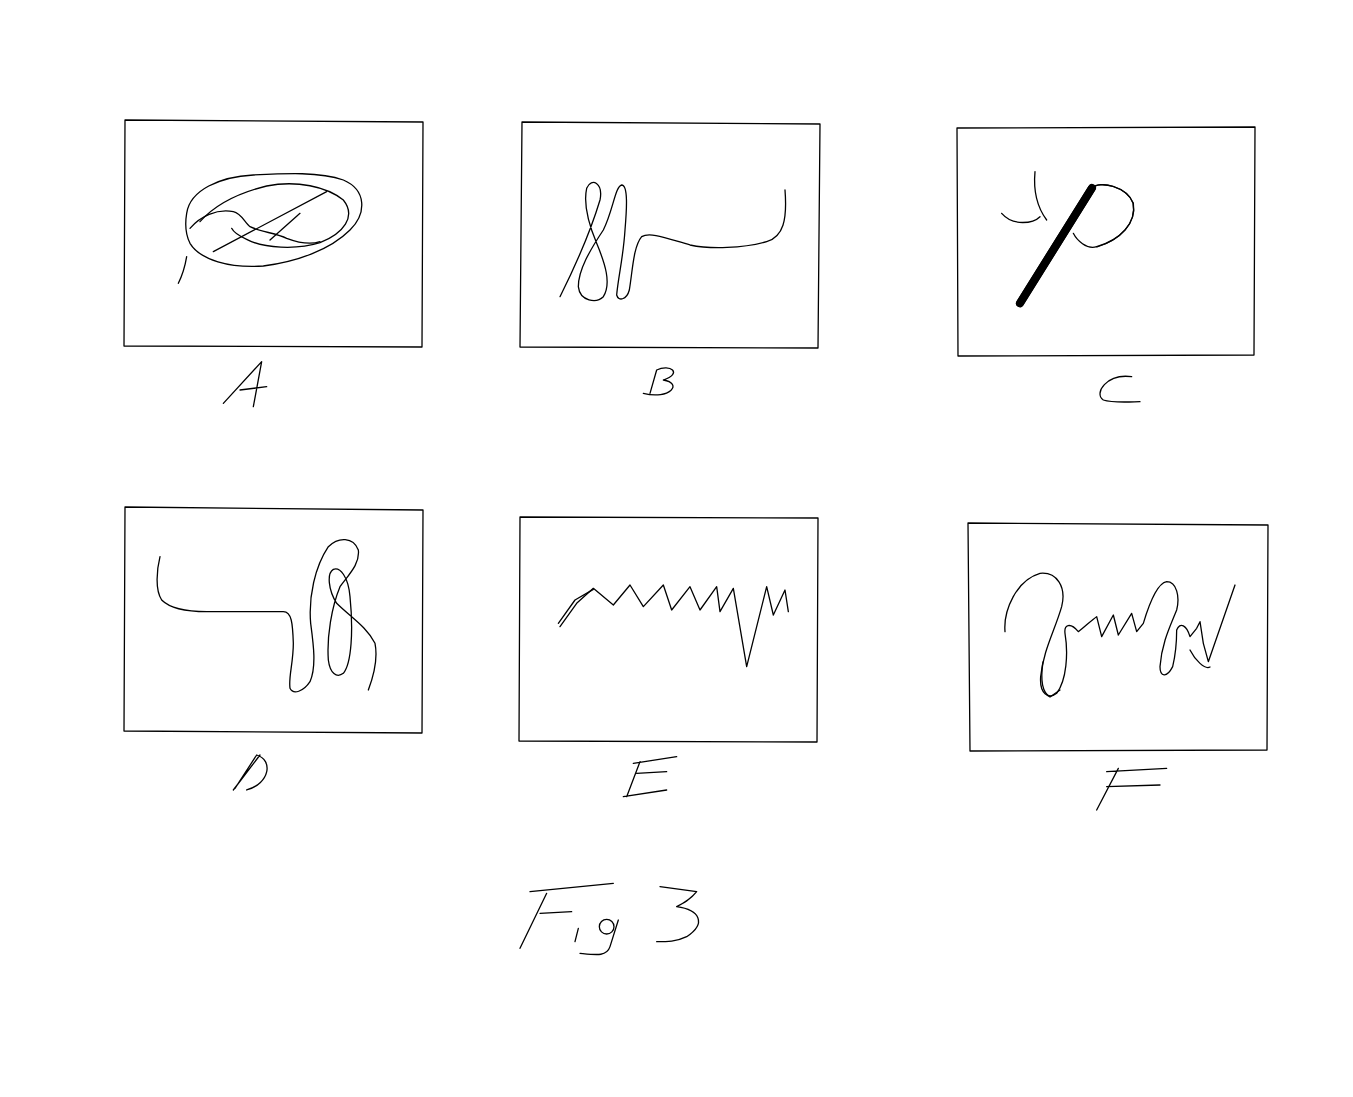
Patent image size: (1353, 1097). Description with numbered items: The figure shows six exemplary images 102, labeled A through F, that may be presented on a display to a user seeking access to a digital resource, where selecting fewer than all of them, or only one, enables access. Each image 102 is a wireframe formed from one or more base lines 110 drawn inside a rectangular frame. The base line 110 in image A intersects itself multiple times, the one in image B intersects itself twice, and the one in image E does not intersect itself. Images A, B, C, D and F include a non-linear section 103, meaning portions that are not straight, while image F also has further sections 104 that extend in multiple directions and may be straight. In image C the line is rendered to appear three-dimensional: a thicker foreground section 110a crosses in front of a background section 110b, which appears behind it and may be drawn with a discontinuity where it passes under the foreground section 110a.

The image 102 is at (278, 557).
The base line 110 is at (1290, 640).
The foreground section 110a is at (1053, 262).
The background section 110b is at (1055, 216).
The non-linear section 103 is at (1047, 697).
The further section 104 is at (1205, 650).